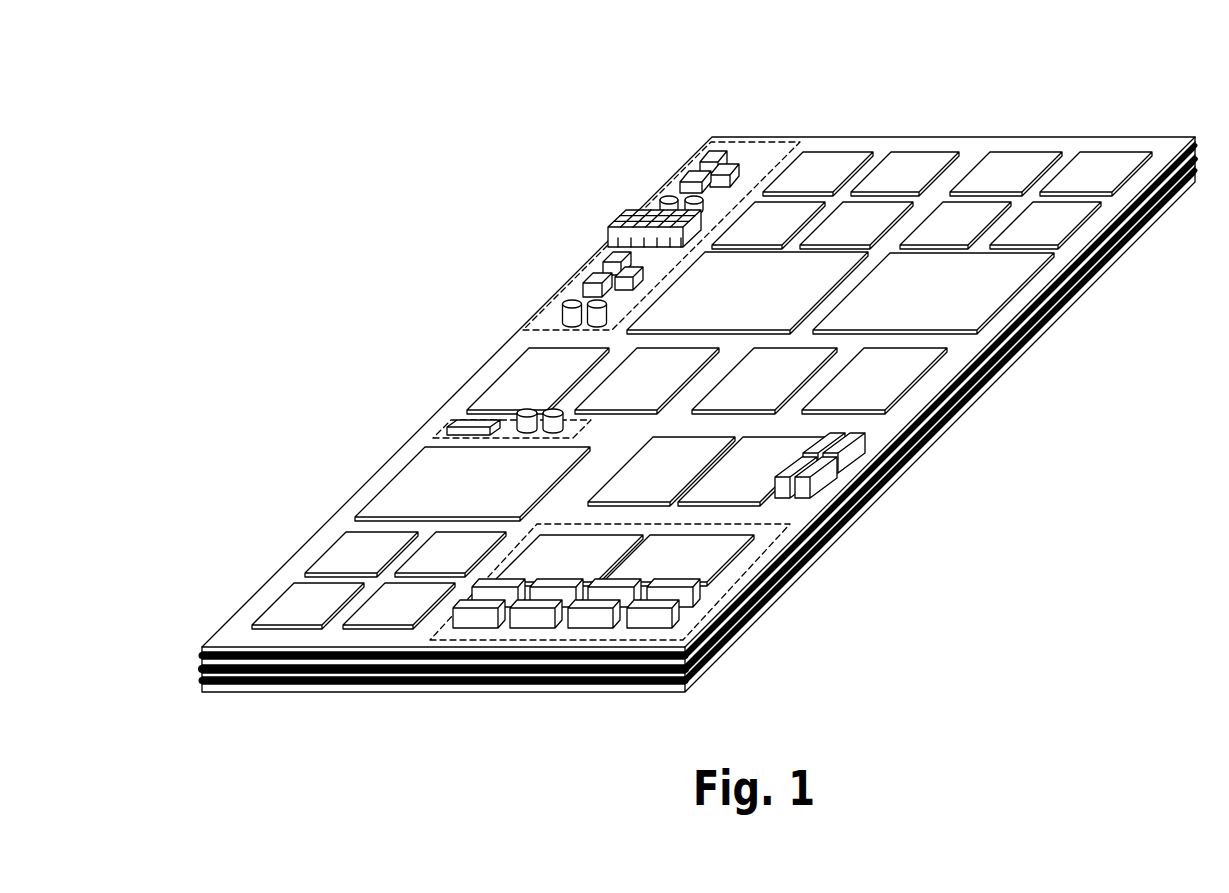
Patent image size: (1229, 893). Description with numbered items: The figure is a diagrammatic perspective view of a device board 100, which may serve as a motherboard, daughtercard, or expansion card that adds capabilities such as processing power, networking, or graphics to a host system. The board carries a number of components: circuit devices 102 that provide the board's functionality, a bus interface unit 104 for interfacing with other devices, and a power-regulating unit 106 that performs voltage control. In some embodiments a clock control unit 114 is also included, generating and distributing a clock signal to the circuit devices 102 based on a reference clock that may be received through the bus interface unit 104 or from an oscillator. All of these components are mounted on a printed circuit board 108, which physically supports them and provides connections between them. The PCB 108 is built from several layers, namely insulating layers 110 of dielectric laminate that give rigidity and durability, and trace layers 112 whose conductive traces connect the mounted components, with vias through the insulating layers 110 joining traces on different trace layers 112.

The device board 100 is at (843, 70).
The circuit devices 102 is at (939, 232).
The bus interface unit 104 is at (600, 256).
The power-regulating unit 106 is at (750, 562).
The printed circuit board 108 is at (927, 468).
The insulating layers 110 is at (952, 420).
The trace layers 112 is at (983, 382).
The clock control unit 114 is at (442, 430).